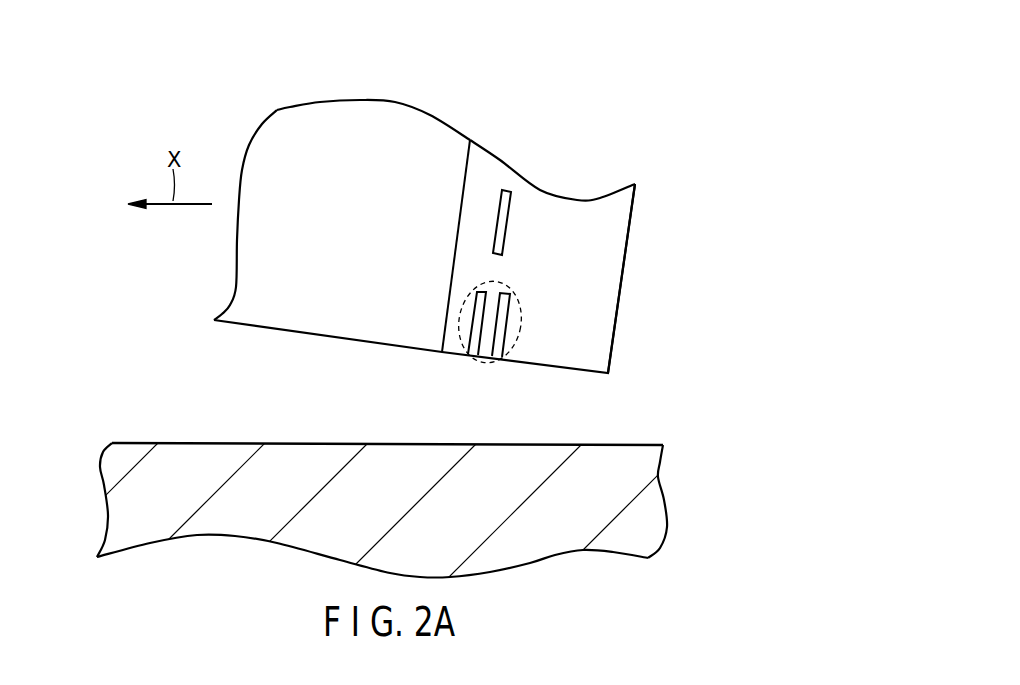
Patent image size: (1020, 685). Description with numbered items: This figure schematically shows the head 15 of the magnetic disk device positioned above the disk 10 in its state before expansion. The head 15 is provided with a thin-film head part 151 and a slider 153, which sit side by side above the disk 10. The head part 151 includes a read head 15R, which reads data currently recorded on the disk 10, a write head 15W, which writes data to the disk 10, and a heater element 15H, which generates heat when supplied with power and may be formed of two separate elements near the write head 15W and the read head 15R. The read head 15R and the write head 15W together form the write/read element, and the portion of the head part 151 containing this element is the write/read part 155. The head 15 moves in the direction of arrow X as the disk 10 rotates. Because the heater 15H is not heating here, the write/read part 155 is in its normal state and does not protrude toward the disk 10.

The disk 10 is at (593, 443).
The head 15 is at (665, 163).
The thin-film head part 151 is at (623, 273).
The slider 153 is at (365, 238).
The write/read part 155 is at (496, 362).
The heater element 15H is at (507, 232).
The write head 15W is at (468, 318).
The read head 15R is at (506, 323).